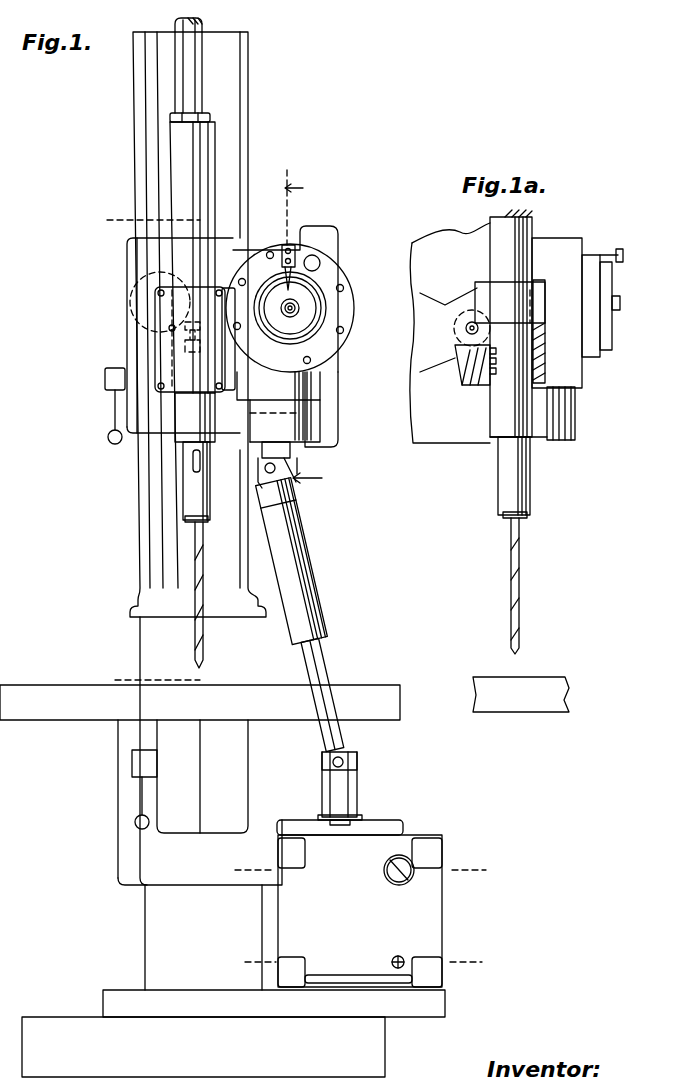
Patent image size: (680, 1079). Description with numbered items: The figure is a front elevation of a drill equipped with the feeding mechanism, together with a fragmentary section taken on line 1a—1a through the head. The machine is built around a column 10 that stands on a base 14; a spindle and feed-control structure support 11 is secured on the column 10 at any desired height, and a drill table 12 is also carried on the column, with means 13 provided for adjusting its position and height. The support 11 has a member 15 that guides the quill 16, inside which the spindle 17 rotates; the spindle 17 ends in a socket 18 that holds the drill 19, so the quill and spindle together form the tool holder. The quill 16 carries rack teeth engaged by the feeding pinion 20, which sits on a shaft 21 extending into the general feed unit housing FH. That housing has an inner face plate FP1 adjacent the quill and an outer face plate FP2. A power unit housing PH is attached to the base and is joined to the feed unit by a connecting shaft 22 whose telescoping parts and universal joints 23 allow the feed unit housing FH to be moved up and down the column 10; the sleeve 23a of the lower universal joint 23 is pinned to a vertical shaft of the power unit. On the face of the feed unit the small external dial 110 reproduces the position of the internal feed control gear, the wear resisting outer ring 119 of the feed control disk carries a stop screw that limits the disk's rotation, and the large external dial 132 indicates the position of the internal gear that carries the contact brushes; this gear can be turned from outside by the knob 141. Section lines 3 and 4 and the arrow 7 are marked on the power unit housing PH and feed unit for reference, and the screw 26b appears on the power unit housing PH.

In FIG. 1, the section line 1a— 1a is at (137, 218).
In FIG. 1, the section line 3-3 / screw 3 is at (359, 870).
In FIG. 1, the section line 4- 4 is at (362, 963).
In FIG. 1, the direction arrow 7 is at (311, 329).
In FIG. 1, the column 10 is at (228, 112).
In FIG. 1, the spindle and feed-control structure support 11 is at (130, 300).
In FIG. 1A, the spindle and feed-control structure support 11 is at (478, 292).
In FIG. 1, the drill table 12 is at (30, 685).
In FIG. 1A, the drill table 12 is at (557, 678).
In FIG. 1, the means for adjusting position and height 13 is at (140, 766).
In FIG. 1, the base 14 is at (58, 1017).
In FIG. 1, the member for guiding the quill 15 is at (155, 360).
In FIG. 1A, the member for guiding the quill 15 is at (547, 372).
In FIG. 1, the quill 16 is at (185, 418).
In FIG. 1, the spindle 17 is at (178, 81).
In FIG. 1, the socket 18 is at (192, 505).
In FIG. 1A, the socket 18 is at (528, 484).
In FIG. 1, the drill 19 is at (194, 636).
In FIG. 1A, the drill 19 is at (520, 574).
In FIG. 1, the feeding pinion 20 is at (172, 275).
In FIG. 1A, the feeding pinion 20 is at (470, 372).
In FIG. 1, the shaft 21 is at (168, 318).
In FIG. 1A, the shaft 21 is at (466, 328).
In FIG. 1, the connecting shaft 22 is at (318, 628).
In FIG. 1, the universal joint 23 is at (290, 496).
In FIG. 1, the sleeve 23a is at (355, 797).
In FIG. 1, the screw 26b is at (398, 956).
In FIG. 1, the small external dial 110 is at (300, 318).
In FIG. 1A, the small external dial 110 is at (612, 330).
In FIG. 1, the wear resisting outer ring 119 is at (348, 296).
In FIG. 1, the large external dial 132 is at (318, 284).
In FIG. 1, the knob 141 is at (313, 256).
In FIG. 1, the general feed unit housing FH is at (300, 391).
In FIG. 1A, the general feed unit housing FH is at (457, 417).
In FIG. 1, the inner face plate FP1 is at (247, 246).
In FIG. 1, the outer face plate FP2 is at (325, 424).
In FIG. 1, the power unit housing PH is at (432, 912).